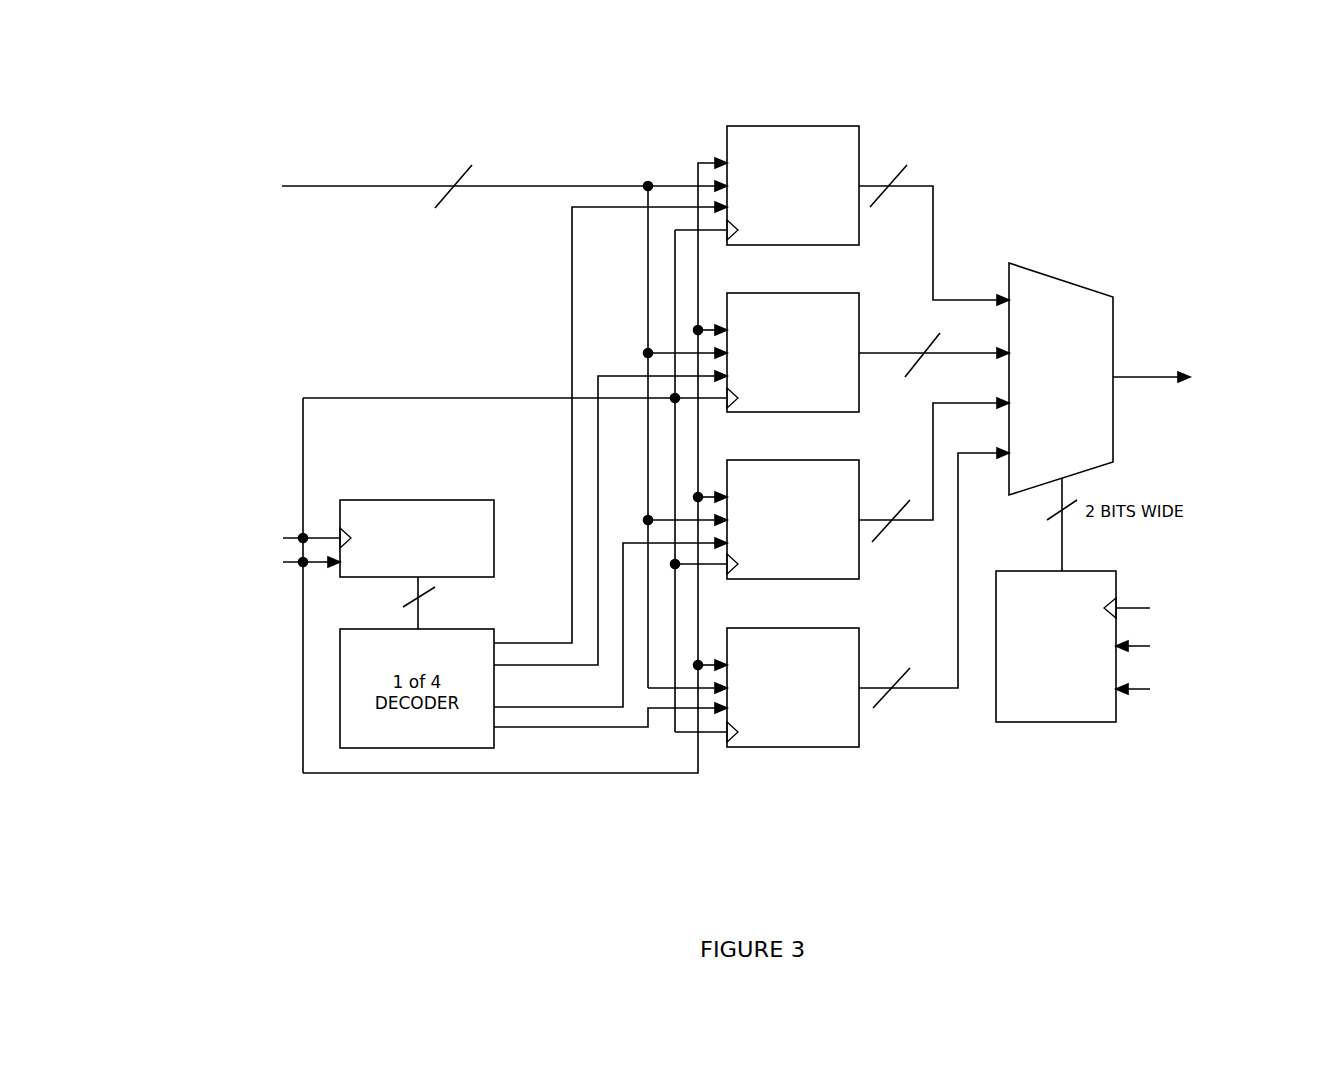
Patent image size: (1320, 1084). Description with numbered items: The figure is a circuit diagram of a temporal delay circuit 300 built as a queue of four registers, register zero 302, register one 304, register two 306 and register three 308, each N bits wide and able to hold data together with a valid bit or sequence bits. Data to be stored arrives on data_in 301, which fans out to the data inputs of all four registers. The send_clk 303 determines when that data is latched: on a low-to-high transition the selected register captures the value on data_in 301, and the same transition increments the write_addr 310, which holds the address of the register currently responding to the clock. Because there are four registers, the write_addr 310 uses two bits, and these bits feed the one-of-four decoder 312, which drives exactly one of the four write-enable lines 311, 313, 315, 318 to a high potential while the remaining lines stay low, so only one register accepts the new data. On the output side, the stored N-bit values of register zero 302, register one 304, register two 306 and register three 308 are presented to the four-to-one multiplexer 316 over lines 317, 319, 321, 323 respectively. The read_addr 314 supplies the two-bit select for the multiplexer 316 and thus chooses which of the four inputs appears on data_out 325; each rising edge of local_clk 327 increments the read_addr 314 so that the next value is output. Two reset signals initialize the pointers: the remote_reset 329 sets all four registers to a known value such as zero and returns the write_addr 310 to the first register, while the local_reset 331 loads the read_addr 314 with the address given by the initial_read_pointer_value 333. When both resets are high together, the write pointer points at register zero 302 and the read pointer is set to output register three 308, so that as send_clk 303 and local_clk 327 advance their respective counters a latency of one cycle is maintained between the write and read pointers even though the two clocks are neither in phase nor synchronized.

The temporal delay circuit 300 is at (1172, 144).
The data_in 301 is at (377, 187).
The reg 0 302 is at (828, 126).
The send_clk 303 is at (377, 398).
The reg 1 304 is at (828, 293).
The reg 2 306 is at (828, 460).
The reg 3 308 is at (828, 628).
The write_addr 310 is at (470, 500).
The decoder output line 311 is at (505, 643).
The 1 of 4 decoder 312 is at (348, 629).
The decoder output line 313 is at (505, 666).
The read_addr 314 is at (1078, 571).
The decoder output line 315 is at (558, 707).
The 4 to 1 multiplexer 316 is at (1045, 275).
The multiplexer input line 317 is at (940, 300).
The decoder output line 318 is at (508, 728).
The multiplexer input line 319 is at (885, 353).
The multiplexer input line 321 is at (935, 403).
The multiplexer input line 323 is at (960, 453).
The data_out 325 is at (1128, 377).
The local_clk 327 is at (1125, 608).
The remote_reset 329 is at (377, 774).
The local_reset 331 is at (1125, 646).
The initial_read_pointer_value 333 is at (1125, 689).